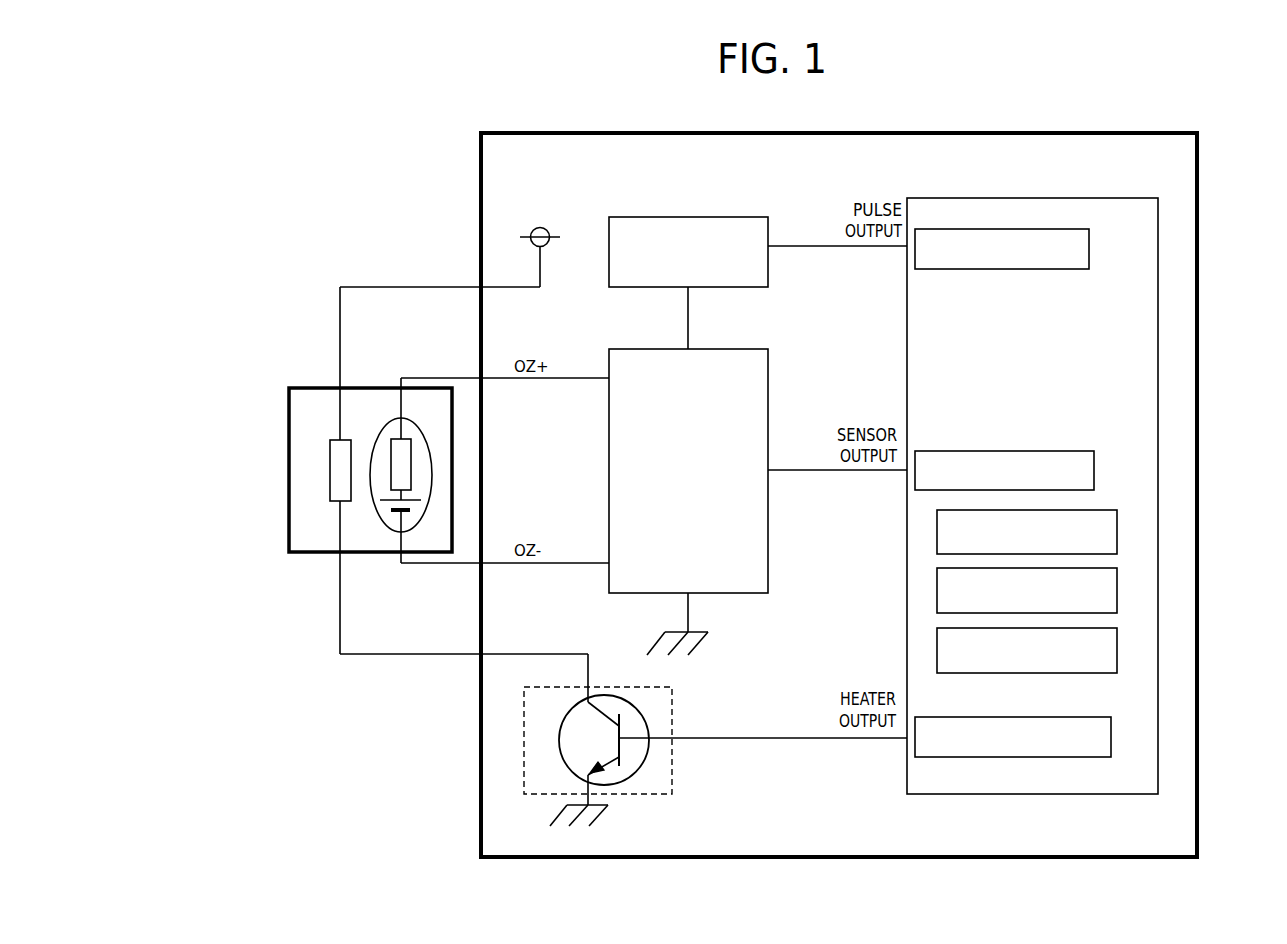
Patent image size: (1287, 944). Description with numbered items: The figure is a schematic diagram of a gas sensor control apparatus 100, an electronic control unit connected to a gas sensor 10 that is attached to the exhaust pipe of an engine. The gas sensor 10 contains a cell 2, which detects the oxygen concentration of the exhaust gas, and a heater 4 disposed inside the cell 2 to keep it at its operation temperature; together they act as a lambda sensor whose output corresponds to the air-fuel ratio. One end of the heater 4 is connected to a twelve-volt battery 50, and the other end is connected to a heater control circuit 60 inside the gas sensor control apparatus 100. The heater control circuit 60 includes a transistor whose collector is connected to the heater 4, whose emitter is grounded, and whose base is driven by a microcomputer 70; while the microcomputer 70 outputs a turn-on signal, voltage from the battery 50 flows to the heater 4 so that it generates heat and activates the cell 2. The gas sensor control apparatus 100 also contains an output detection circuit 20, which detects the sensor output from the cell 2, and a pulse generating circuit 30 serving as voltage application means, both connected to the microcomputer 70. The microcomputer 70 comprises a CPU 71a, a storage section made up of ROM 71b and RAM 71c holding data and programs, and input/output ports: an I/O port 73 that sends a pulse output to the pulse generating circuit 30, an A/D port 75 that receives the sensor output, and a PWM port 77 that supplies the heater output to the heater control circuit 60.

The gas sensor control apparatus 100 is at (528, 133).
The gas sensor 10 is at (357, 462).
The heater 4 is at (334, 503).
The cell 2 is at (387, 528).
The battery 50 is at (545, 226).
The pulse generating circuit 30 is at (672, 215).
The output detection circuit 20 is at (770, 350).
The heater control circuit 60 is at (672, 773).
The microcomputer 70 is at (998, 196).
The I/O port 73 is at (1040, 268).
The A/D port 75 is at (1060, 451).
The CPU 71a is at (1115, 535).
The ROM 71b is at (1115, 588).
The RAM 71c is at (1115, 653).
The PWM port 77 is at (1050, 758).